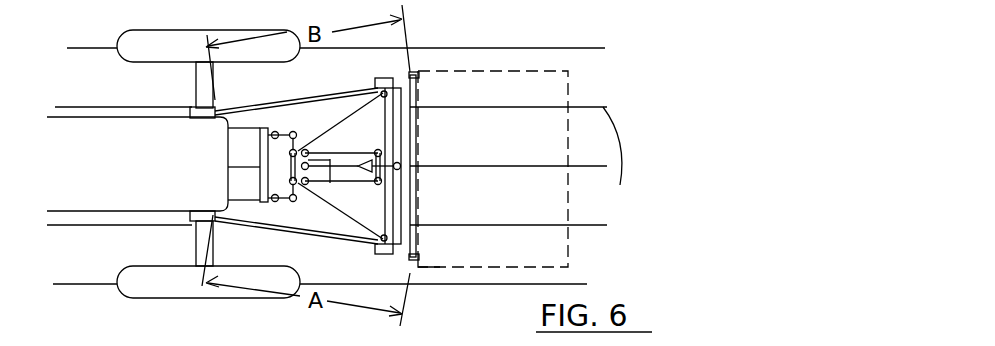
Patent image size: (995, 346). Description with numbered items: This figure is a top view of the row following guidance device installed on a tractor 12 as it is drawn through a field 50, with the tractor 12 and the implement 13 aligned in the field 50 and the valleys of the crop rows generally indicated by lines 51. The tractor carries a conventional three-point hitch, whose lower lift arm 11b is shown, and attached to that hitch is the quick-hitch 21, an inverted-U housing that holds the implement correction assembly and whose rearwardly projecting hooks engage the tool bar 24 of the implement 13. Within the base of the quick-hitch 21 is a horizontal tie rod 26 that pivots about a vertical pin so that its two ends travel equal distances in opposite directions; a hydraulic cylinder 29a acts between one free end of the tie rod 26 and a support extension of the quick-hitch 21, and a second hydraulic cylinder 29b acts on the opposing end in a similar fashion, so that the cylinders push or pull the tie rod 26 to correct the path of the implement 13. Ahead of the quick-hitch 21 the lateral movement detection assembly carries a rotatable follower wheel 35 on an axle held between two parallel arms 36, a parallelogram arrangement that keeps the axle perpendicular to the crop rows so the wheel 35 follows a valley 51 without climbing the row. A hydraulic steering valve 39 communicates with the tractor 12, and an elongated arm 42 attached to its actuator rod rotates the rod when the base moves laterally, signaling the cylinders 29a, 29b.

The rear steering wheel 11b is at (285, 231).
The tractor 12 is at (108, 135).
The implement 13 is at (568, 88).
The quick-hitch 21 is at (405, 150).
The tool bar 24 is at (420, 84).
The tie rod 26 is at (400, 113).
The hydraulic cylinder 29a is at (380, 256).
The second hydraulic cylinder 29b is at (379, 78).
The rotatable wheel 35 is at (358, 180).
The parallel arms 36 is at (365, 150).
The hydraulic steering valve 39 is at (310, 186).
The elongated arm 42 is at (315, 163).
The field 50 is at (640, 256).
The lines indicating valleys of crop rows 51 is at (590, 225).